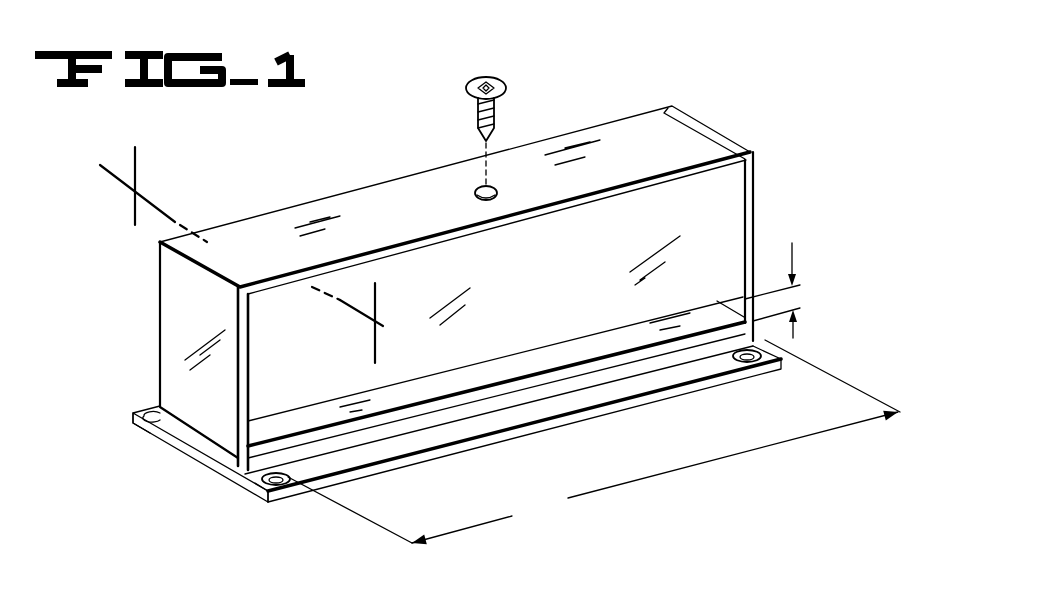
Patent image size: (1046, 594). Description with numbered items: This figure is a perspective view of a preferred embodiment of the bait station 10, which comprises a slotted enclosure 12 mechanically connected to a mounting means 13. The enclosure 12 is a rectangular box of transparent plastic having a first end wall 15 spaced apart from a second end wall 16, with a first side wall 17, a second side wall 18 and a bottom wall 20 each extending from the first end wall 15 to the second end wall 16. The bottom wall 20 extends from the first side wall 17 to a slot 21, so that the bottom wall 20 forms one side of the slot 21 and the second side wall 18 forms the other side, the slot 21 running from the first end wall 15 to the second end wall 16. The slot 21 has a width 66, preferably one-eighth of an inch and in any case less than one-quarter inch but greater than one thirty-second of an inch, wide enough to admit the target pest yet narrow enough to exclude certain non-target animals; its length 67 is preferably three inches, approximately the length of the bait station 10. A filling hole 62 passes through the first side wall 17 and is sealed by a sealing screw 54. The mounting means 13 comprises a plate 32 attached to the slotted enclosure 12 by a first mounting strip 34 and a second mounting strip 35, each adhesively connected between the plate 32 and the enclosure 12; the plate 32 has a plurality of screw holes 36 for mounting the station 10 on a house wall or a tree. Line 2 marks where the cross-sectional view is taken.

The bait station 10 is at (736, 78).
The slotted enclosure 12 is at (150, 354).
The mounting means 13 is at (172, 470).
The first end wall 15 is at (165, 325).
The second end wall 16 is at (742, 143).
The first side wall 17 is at (650, 118).
The second side wall 18 is at (363, 425).
The bottom wall 20 is at (730, 220).
The slot 21 is at (557, 352).
The plate 32 is at (700, 388).
The first mounting strip 34 is at (157, 430).
The second mounting strip 35 is at (227, 467).
The screw holes 36 is at (290, 482).
The sealing screw 54 is at (470, 82).
The filling hole 62 is at (478, 190).
The width 66 is at (797, 292).
The length 67 is at (594, 442).
The line 2- 2 is at (116, 189).